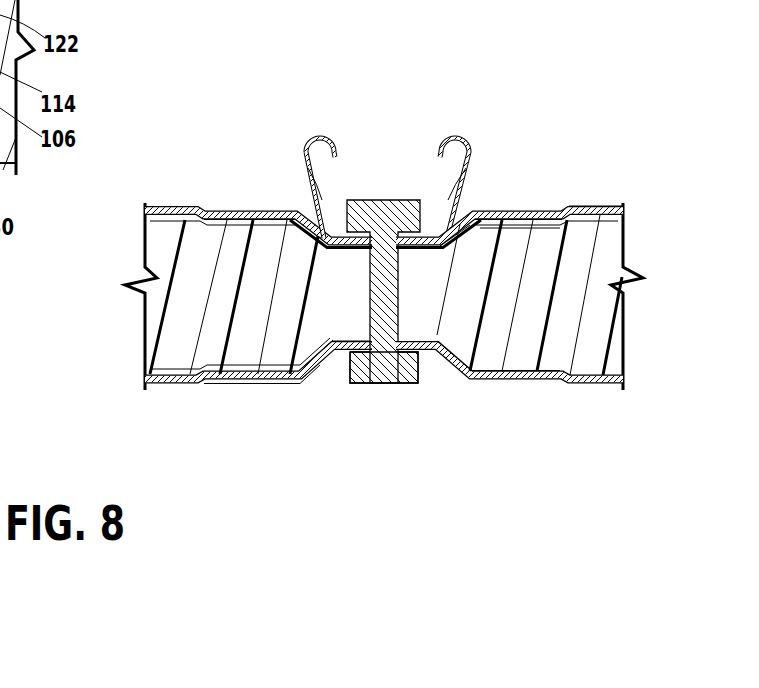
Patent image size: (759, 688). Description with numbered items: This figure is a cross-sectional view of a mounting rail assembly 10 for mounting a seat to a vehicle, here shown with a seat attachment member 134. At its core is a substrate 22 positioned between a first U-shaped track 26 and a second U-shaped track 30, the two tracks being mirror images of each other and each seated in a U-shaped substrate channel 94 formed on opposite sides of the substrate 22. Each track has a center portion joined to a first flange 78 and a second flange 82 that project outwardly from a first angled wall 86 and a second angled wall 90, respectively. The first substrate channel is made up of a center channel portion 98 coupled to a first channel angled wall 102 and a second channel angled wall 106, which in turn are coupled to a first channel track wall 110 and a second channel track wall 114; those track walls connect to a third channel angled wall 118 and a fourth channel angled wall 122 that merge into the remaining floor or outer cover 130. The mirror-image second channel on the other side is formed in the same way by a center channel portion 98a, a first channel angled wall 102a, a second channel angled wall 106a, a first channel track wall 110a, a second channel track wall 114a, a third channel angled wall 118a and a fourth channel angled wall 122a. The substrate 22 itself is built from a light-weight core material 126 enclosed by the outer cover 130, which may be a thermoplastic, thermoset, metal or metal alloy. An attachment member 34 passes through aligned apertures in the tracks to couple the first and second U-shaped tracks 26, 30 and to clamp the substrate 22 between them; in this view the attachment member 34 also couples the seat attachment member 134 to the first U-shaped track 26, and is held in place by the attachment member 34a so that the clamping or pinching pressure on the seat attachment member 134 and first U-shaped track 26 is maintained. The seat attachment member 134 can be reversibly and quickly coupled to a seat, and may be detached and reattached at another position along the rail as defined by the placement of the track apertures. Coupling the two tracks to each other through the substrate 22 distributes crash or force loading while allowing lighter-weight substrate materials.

The mounting rail assembly 10 is at (308, 102).
The substrate 22 is at (183, 207).
The first U-shaped track 26 is at (543, 197).
The second U-shaped track 30 is at (296, 396).
The attachment member 34 is at (380, 200).
The attachment member 34a is at (423, 384).
The first flange 78 is at (248, 210).
The second flange 82 is at (510, 207).
The first angled wall 86 is at (292, 153).
The second angled wall 90 is at (470, 153).
The U-shaped substrate channel 94 is at (410, 232).
The center channel portion 98 is at (240, 383).
The center channel portion 98a is at (338, 353).
The first channel angled wall 102 is at (170, 362).
The first channel angled wall 102a is at (322, 365).
The second channel angled wall 106 is at (432, 246).
The second channel angled wall 106a is at (446, 378).
The first channel track wall 110 is at (330, 237).
The first channel track wall 110a is at (268, 380).
The second channel track wall 114 is at (517, 222).
The second channel track wall 114a is at (520, 383).
The third channel angled wall 118 is at (158, 214).
The third channel angled wall 118a is at (207, 380).
The fourth channel angled wall 122 is at (597, 221).
The fourth channel angled wall 122a is at (567, 381).
The light-weight core material 126 is at (492, 325).
The outer cover 130 is at (600, 207).
The seat attachment member 134 is at (463, 132).